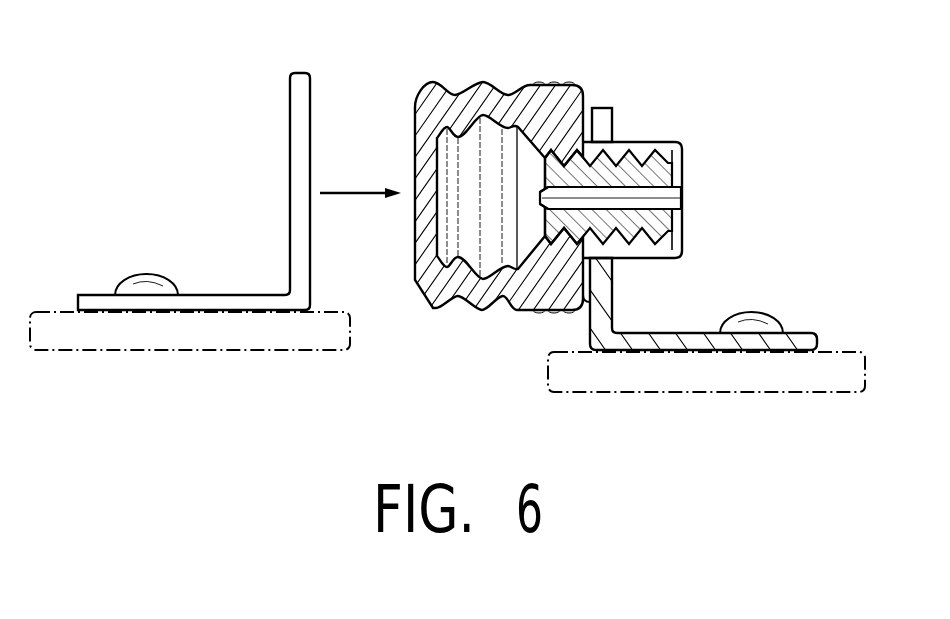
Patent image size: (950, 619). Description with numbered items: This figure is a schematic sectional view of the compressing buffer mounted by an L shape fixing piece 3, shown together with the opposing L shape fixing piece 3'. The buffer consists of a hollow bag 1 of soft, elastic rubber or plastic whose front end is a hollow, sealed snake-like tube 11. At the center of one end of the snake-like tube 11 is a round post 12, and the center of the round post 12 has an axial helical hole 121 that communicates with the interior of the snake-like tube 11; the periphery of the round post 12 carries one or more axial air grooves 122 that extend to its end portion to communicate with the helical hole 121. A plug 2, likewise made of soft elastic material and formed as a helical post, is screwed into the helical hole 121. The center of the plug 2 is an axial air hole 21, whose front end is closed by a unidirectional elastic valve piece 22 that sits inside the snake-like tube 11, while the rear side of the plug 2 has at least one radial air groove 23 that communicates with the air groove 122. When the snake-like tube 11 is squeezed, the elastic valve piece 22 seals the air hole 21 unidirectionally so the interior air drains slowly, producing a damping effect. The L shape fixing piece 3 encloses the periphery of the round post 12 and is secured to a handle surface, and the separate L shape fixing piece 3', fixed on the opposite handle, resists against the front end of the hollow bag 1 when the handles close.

The hollow bag 1 is at (549, 56).
The snake-like tube 11 is at (467, 101).
The round post 12 is at (687, 175).
The helical hole 121 is at (618, 148).
The air groove 122 is at (676, 147).
The plug 2 is at (635, 252).
The air hole 21 is at (633, 276).
The unidirectional elastic valve piece 22 is at (538, 203).
The radial air groove 23 is at (672, 224).
The L shape fixing piece 3 is at (696, 302).
The L shape fixing piece 3' is at (194, 191).